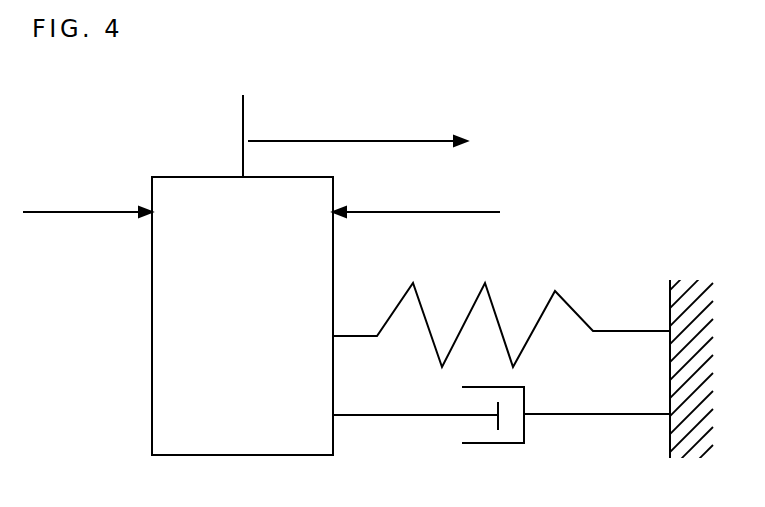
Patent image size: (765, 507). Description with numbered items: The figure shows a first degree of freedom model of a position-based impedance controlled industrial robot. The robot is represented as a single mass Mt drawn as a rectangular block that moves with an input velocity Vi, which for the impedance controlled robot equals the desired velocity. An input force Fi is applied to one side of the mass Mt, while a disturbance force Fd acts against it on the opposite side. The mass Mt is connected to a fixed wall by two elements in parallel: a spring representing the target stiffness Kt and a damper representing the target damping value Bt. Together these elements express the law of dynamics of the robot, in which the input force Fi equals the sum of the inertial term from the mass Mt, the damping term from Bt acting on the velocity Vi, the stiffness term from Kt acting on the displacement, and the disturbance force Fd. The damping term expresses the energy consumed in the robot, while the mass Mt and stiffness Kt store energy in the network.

The target mass Mt is at (242, 316).
The input velocity Vi is at (355, 133).
The input force Fi is at (87, 191).
The disturbance force Fd is at (416, 192).
The target stiffness Kt is at (501, 304).
The target damping value Bt is at (501, 441).